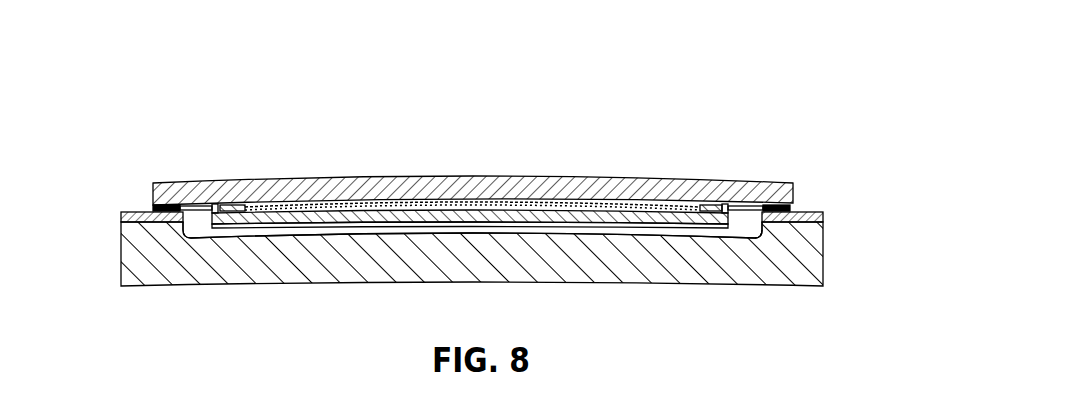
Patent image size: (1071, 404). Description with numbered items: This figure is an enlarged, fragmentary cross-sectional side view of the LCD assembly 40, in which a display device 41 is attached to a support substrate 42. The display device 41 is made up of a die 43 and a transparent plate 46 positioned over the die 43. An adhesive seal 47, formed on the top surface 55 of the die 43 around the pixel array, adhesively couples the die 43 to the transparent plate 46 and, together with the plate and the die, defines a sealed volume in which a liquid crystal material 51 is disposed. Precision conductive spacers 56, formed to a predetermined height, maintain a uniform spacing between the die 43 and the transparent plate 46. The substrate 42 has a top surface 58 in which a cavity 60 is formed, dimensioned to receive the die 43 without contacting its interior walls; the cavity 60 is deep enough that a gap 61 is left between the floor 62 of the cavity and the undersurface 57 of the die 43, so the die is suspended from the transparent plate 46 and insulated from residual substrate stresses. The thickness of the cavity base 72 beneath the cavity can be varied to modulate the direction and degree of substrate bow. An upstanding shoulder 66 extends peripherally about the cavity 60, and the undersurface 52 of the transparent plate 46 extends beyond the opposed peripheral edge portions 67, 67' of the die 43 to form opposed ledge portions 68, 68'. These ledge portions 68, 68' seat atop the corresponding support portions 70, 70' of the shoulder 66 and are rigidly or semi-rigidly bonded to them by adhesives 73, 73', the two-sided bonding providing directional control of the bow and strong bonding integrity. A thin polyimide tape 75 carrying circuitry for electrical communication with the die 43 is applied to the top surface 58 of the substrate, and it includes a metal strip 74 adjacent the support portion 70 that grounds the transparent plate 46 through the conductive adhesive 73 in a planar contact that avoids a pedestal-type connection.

The LCD assembly 40 is at (772, 66).
The display device 41 is at (233, 138).
The support substrate 42 is at (834, 268).
The die 43 is at (664, 240).
The transparent plate 46 is at (576, 170).
The adhesive seal 47 is at (277, 183).
The liquid crystal material 51 is at (490, 184).
The undersurface of the transparent plate 52 is at (190, 206).
The top surface of the die 55 is at (598, 186).
The precision conductive spacers 56 is at (212, 206).
The undersurface of the die 57 is at (580, 230).
The top surface of the substrate 58 is at (140, 212).
The cavity 60 is at (760, 236).
The gap 61 is at (335, 226).
The floor of the cavity 62 is at (262, 228).
The upstanding shoulder 66 is at (110, 250).
The peripheral edge portion of the die 67 is at (188, 275).
The peripheral edge portion of the die 67' is at (744, 283).
The ledge portion 68 is at (143, 166).
The ledge portion 68' is at (800, 172).
The support portion 70 is at (475, 239).
The support portion 70' is at (830, 168).
The cavity base 72 is at (407, 262).
The adhesive 73 is at (152, 272).
The adhesive 73' is at (815, 163).
The metal strip 74 is at (150, 210).
The polyimide tape 75 is at (122, 215).